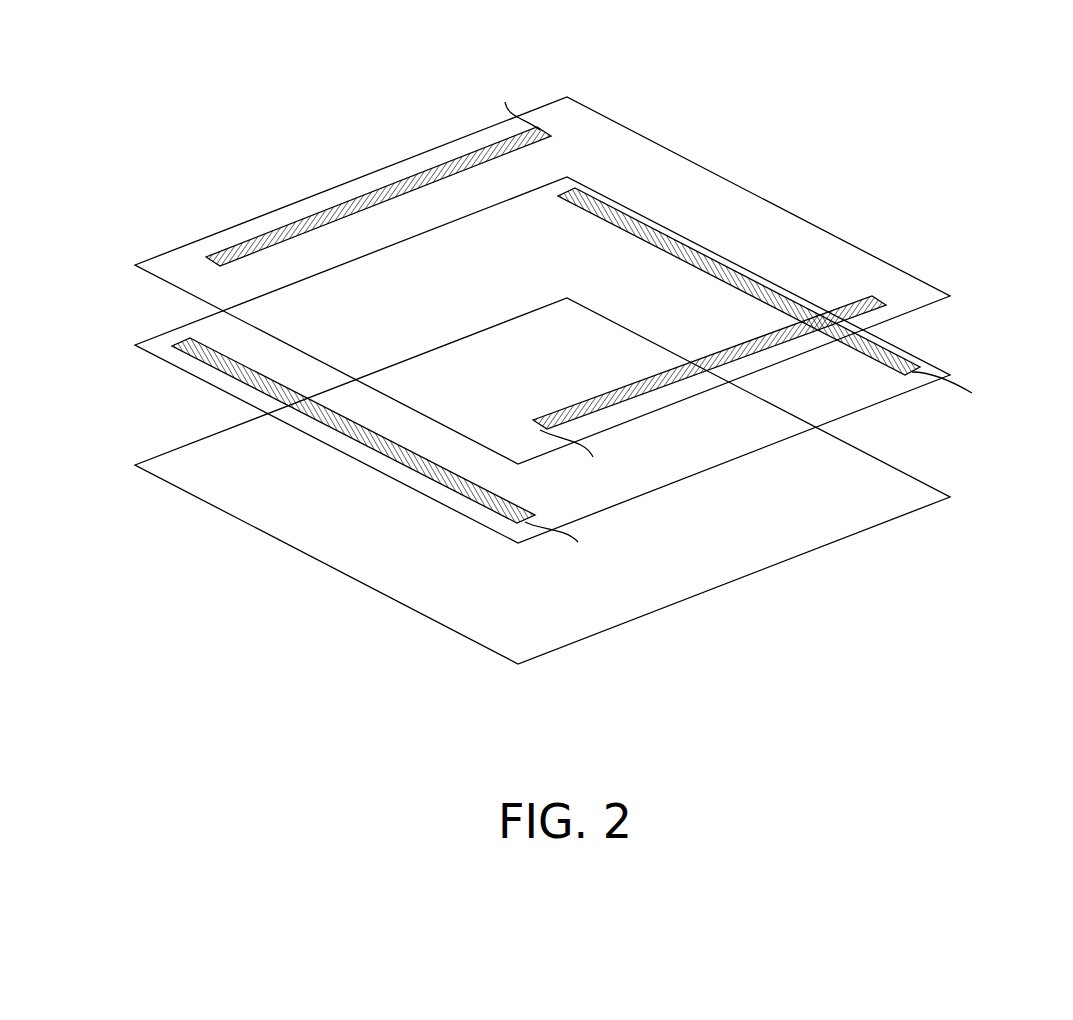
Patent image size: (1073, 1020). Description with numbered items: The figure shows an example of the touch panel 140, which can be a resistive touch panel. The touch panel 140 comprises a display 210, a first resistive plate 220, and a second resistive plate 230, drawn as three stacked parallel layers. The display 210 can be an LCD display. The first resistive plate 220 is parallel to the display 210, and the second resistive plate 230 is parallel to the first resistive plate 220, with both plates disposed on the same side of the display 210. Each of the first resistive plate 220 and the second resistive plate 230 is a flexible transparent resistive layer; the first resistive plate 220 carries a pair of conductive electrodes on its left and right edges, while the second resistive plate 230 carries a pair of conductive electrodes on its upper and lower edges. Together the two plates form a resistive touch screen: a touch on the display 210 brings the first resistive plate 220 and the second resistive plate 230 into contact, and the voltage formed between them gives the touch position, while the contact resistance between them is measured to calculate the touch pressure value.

The touch panel 140 is at (955, 92).
The display 210 is at (497, 655).
The first resistive plate 220 is at (714, 445).
The second resistive plate 230 is at (368, 187).